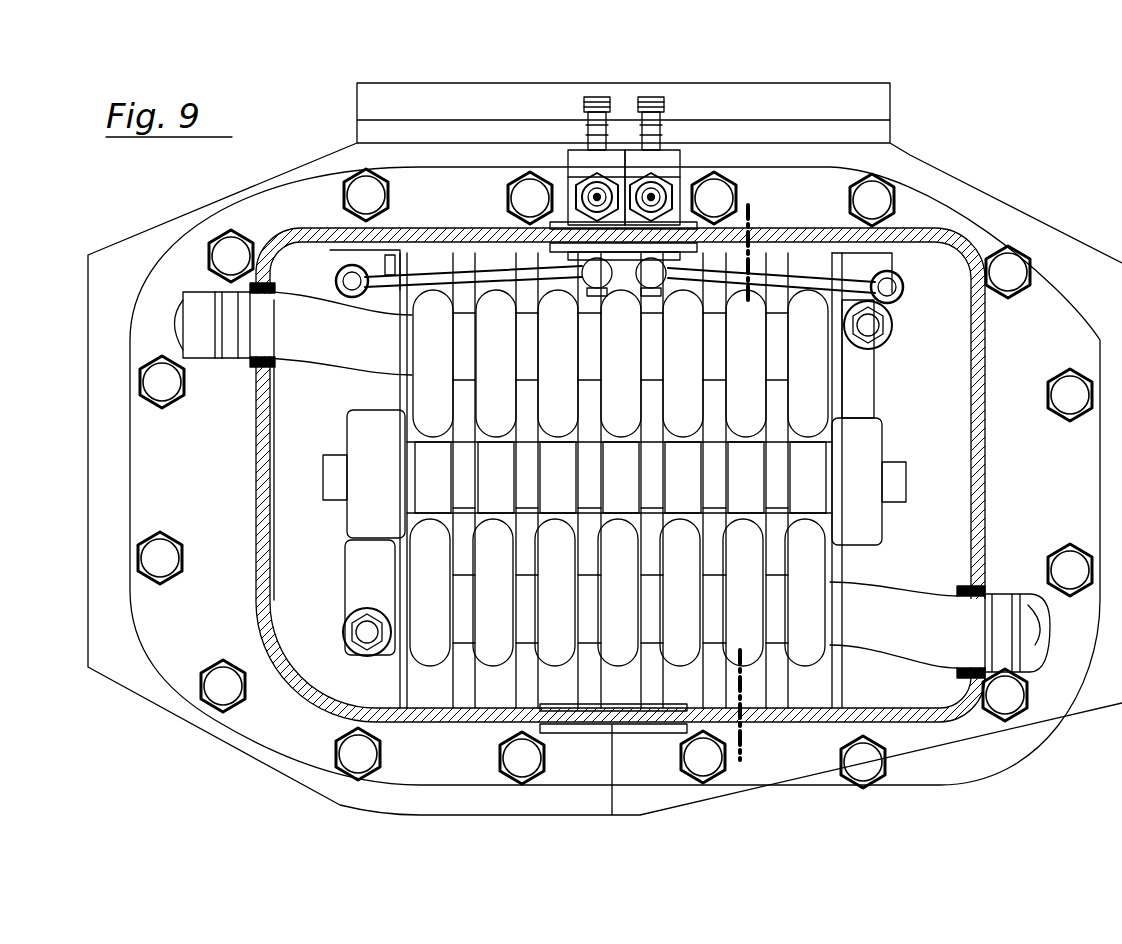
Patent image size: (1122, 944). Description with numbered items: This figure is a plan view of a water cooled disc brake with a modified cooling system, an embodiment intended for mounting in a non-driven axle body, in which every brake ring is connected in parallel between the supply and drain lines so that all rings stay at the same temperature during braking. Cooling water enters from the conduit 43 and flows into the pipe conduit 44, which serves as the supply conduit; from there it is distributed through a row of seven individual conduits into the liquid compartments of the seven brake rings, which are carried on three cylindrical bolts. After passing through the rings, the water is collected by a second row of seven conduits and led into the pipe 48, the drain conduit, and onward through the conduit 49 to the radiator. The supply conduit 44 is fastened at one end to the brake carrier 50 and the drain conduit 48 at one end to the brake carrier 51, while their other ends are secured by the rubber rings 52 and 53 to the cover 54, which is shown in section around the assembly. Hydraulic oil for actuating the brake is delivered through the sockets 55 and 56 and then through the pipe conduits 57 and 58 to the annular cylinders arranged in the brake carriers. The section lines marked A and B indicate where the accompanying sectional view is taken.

The conduit 43 is at (197, 362).
The pipe conduit 44 is at (311, 345).
The pipe 48 is at (905, 608).
The conduit 49 is at (1025, 600).
The brake carrier 50 is at (345, 549).
The brake carrier 51 is at (868, 400).
The rubber ring 52 is at (252, 370).
The rubber ring 53 is at (985, 588).
The cover 54 is at (262, 516).
The socket 55 is at (585, 165).
The socket 56 is at (690, 162).
The pipe conduit 57 is at (470, 268).
The pipe conduit 58 is at (812, 283).
The section line A is at (750, 238).
The section line B is at (741, 720).